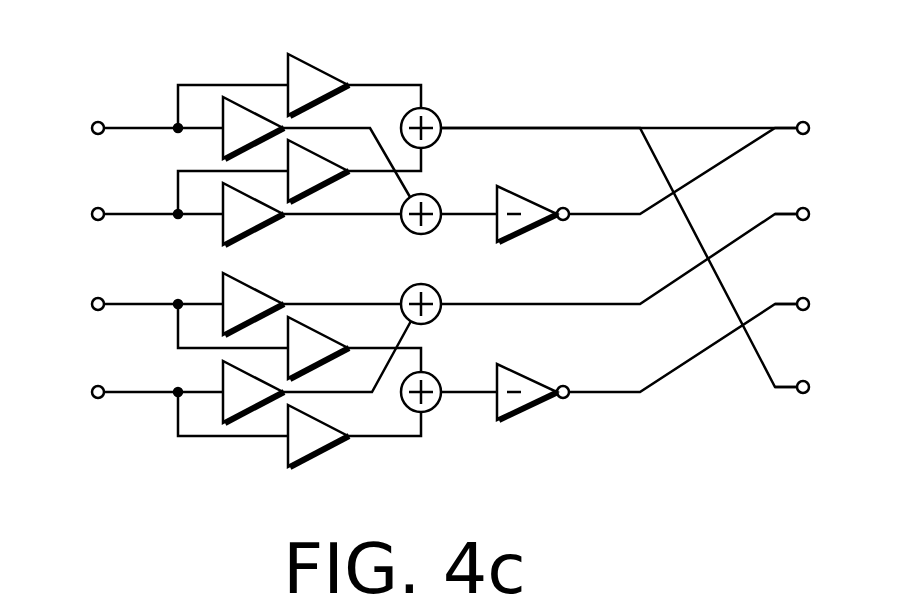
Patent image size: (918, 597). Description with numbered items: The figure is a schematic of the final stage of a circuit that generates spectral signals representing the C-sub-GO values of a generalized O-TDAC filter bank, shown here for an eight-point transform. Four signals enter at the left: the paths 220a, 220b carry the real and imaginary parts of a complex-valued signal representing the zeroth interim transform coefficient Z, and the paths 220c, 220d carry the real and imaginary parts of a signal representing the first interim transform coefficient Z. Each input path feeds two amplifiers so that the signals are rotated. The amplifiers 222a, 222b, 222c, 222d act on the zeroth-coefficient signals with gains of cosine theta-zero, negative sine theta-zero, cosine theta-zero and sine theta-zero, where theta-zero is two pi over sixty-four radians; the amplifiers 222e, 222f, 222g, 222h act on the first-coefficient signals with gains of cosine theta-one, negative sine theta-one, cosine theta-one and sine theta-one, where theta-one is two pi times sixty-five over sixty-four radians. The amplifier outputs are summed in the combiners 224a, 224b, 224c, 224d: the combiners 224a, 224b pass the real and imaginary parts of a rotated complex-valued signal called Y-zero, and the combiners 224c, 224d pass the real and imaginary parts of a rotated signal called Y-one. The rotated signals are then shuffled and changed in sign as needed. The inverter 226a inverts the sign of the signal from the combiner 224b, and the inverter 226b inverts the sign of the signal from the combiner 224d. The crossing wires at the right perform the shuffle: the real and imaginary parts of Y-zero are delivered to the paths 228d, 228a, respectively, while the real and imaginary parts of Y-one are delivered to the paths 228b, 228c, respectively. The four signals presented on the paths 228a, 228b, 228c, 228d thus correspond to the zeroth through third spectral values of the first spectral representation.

The path 220a is at (142, 125).
The path 220b is at (142, 212).
The path 220c is at (135, 312).
The path 220d is at (135, 398).
The amplifier 222a is at (317, 63).
The amplifier 222b is at (241, 110).
The amplifier 222c is at (318, 190).
The amplifier 222d is at (222, 233).
The amplifier 222e is at (222, 288).
The amplifier 222f is at (303, 322).
The amplifier 222g is at (245, 420).
The amplifier 222h is at (316, 457).
The combiner 224a is at (436, 108).
The combiner 224b is at (435, 188).
The combiner 224c is at (437, 318).
The combiner 224d is at (434, 408).
The inverter 226a is at (521, 233).
The inverter 226b is at (520, 412).
The path 228a is at (762, 127).
The path 228b is at (762, 213).
The path 228c is at (762, 302).
The path 228d is at (758, 348).